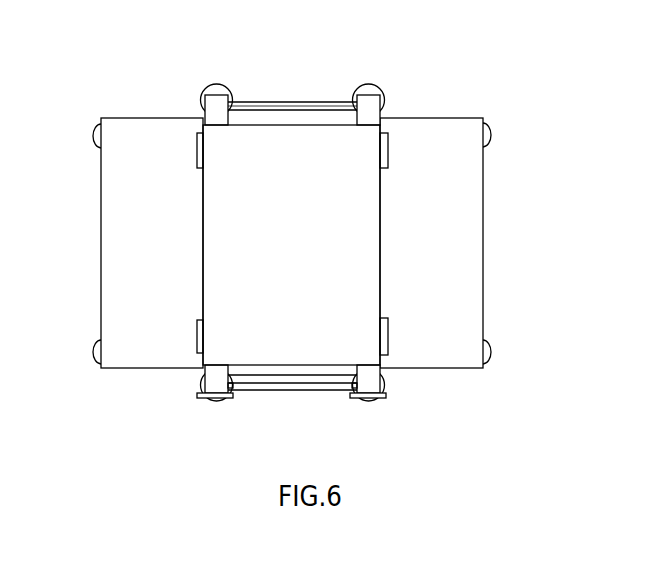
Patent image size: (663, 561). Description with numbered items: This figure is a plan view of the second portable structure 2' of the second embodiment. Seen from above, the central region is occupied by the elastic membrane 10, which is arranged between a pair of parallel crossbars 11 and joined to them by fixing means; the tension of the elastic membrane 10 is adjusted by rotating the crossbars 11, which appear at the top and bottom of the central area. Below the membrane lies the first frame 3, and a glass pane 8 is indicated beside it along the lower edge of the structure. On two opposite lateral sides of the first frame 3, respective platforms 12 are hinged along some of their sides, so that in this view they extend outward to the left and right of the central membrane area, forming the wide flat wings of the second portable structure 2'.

The second portable structure 2' is at (285, 229).
The first frame 3 is at (320, 383).
The glass pane 8 is at (260, 371).
The elastic membrane 10 is at (320, 145).
The crossbar 11 is at (210, 100).
The platform 12 is at (135, 238).